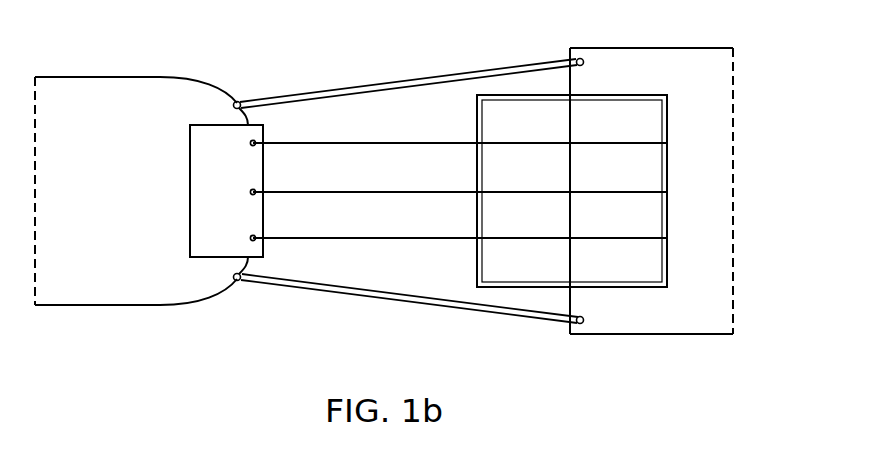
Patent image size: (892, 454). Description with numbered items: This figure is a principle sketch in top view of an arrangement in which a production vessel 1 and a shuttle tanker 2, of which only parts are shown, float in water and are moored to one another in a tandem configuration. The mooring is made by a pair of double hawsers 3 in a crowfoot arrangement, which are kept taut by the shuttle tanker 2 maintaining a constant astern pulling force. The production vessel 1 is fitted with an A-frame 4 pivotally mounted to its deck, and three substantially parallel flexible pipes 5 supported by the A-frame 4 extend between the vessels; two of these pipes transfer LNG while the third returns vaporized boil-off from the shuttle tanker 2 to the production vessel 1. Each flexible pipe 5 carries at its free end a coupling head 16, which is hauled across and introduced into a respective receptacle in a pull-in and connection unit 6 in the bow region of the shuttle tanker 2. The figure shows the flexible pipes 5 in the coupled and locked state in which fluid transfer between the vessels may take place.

The production vessel 1 is at (705, 120).
The shuttle tanker 2 is at (112, 214).
The double hawsers 3 is at (423, 80).
The A-frame 4 is at (622, 95).
The flexible pipes 5 is at (413, 237).
The pull-in and connection unit 6 is at (206, 176).
The coupling head 16 is at (265, 236).